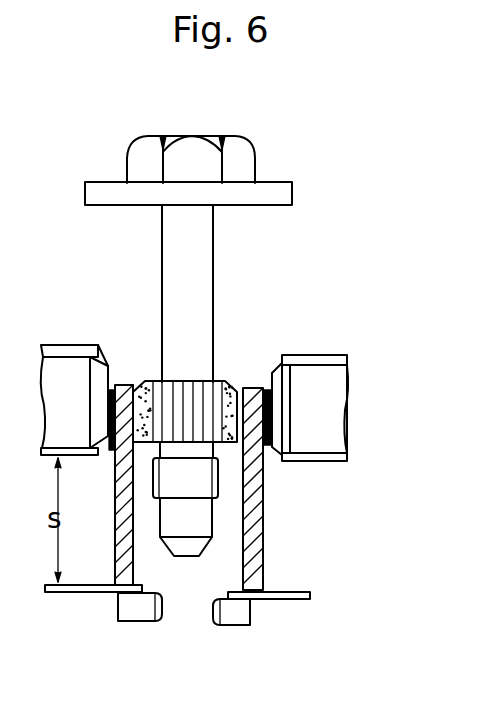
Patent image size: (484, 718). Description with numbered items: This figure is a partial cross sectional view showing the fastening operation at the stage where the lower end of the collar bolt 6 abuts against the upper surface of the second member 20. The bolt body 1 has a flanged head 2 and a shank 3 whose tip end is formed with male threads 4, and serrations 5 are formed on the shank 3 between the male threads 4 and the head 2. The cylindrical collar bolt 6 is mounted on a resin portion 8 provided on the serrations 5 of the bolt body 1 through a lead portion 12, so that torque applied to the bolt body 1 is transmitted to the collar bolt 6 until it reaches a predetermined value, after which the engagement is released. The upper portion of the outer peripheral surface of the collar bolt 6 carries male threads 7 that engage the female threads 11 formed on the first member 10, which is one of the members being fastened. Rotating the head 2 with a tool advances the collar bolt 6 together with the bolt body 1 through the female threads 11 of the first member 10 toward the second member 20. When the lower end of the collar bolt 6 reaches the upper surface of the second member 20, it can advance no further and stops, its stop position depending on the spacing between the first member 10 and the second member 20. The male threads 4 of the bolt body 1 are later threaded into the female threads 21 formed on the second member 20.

The bolt body 1 is at (276, 138).
The flanged head 2 is at (244, 160).
The shank 3 is at (193, 253).
The male threads 4 is at (218, 480).
The serrations 5 is at (180, 386).
The collar bolt 6 is at (258, 535).
The male threads 7 is at (290, 421).
The resin portion 8 is at (236, 386).
The first member 10 is at (328, 388).
The female threads 11 is at (128, 386).
The lead portion 12 is at (264, 390).
The second member 20 is at (305, 597).
The female threads 21 is at (162, 610).